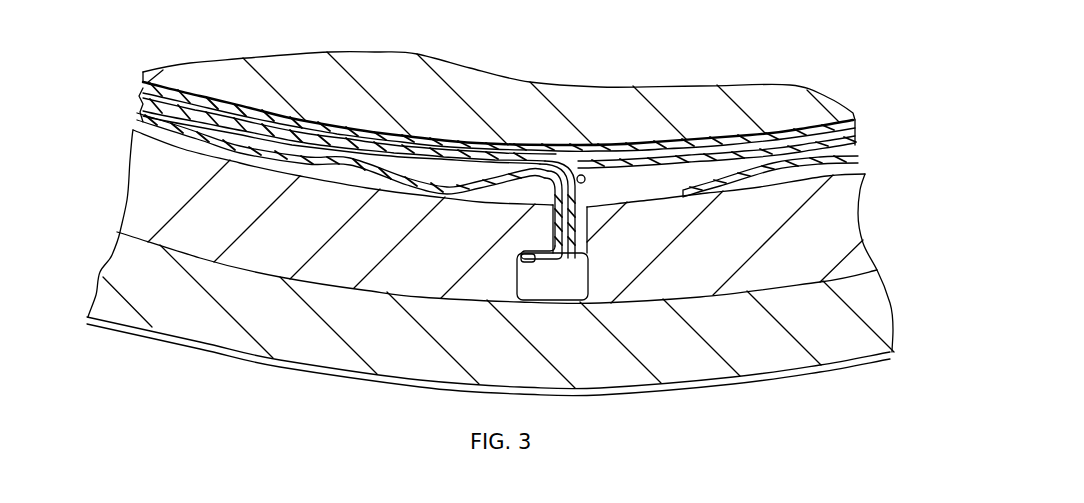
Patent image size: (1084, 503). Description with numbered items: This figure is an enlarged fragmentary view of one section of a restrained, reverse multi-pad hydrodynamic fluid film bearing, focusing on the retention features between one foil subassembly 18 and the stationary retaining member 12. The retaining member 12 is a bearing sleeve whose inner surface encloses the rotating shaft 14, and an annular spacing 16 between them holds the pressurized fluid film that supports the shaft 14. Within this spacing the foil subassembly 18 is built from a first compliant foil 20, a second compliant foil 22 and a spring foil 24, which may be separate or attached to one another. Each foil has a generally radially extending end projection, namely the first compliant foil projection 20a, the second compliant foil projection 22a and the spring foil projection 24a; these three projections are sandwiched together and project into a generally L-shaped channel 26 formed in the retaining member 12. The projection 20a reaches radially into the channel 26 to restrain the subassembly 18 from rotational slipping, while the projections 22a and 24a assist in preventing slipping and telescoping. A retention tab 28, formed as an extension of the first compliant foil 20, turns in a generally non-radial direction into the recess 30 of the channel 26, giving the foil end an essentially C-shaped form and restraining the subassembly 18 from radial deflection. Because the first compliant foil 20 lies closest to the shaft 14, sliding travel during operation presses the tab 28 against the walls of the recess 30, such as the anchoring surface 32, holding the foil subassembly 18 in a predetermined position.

The stationary retaining member 12 is at (160, 183).
The shaft 14 is at (380, 71).
The annular spacing 16 is at (197, 143).
The foil subassembly 18 is at (458, 140).
The first compliant foil 20 is at (413, 152).
The first compliant foil projection 20a is at (568, 185).
The second compliant foil 22 is at (657, 157).
The second compliant foil projection 22a is at (585, 194).
The spring foil 24 is at (321, 152).
The spring foil projection 24a is at (560, 222).
The channel 26 is at (583, 231).
The retention tab 28 is at (543, 270).
The recess 30 is at (525, 283).
The anchoring surface 32 is at (518, 260).